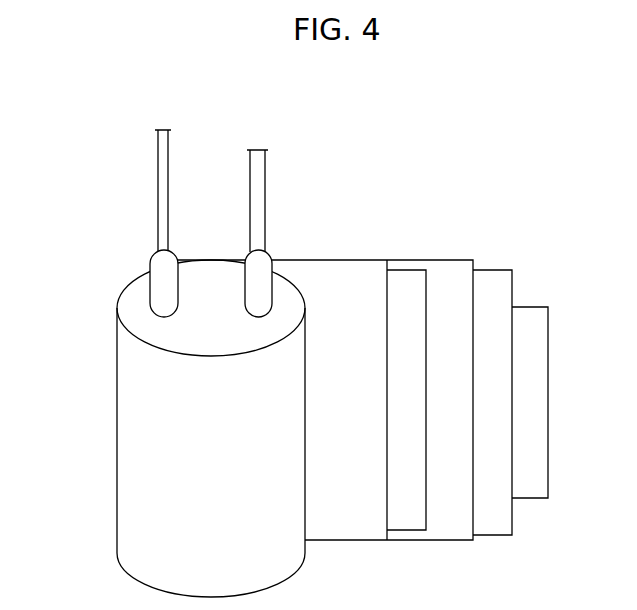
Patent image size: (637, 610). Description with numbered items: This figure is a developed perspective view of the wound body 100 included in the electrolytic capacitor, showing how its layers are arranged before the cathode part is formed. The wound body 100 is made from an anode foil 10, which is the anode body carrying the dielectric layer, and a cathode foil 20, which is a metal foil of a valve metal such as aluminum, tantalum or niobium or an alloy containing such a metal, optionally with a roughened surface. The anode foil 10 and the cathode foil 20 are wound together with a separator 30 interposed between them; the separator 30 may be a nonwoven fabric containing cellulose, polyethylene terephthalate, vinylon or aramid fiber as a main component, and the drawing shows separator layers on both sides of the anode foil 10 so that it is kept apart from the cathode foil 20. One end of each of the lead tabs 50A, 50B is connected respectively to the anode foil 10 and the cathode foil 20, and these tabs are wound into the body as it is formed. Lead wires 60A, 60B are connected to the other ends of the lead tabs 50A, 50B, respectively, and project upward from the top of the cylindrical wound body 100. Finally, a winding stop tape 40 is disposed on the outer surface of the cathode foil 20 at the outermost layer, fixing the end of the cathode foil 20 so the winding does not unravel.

The wound body 100 is at (384, 135).
The anode foil 10 is at (416, 512).
The cathode foil 20 is at (497, 527).
The separator 30 is at (357, 512).
The winding stop tape 40 is at (529, 487).
The lead tab 50A is at (155, 263).
The lead tab 50B is at (276, 258).
The lead wire 60A is at (157, 167).
The lead wire 60B is at (268, 160).